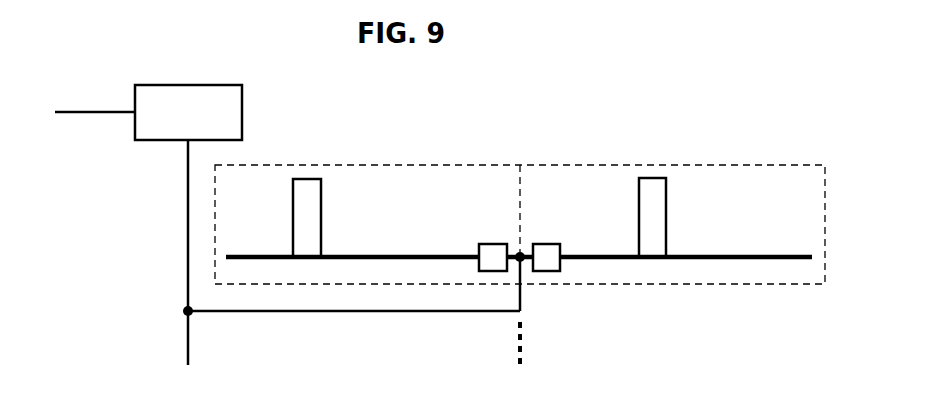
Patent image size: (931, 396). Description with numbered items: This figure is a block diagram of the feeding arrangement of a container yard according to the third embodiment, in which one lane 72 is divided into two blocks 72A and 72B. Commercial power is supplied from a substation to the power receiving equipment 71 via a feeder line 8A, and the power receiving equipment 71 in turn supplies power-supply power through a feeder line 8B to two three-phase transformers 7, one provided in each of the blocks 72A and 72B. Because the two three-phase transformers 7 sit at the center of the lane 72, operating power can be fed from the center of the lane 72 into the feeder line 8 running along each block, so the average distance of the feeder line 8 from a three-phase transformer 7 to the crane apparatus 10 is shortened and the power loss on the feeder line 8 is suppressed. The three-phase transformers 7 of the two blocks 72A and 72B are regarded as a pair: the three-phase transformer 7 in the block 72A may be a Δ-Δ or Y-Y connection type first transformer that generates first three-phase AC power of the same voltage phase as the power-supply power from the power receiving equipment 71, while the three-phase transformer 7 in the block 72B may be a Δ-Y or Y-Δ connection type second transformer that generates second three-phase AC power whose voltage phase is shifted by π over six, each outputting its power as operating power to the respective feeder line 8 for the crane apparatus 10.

The feeder line 8A is at (93, 113).
The power receiving equipment 71 is at (243, 108).
The feeder line 8B is at (187, 205).
The lane 72 is at (745, 155).
The block 72A is at (400, 165).
The block 72B is at (562, 165).
The crane apparatus 10 is at (322, 205).
The feeder line 8 is at (439, 254).
The three-phase transformer 7 is at (493, 242).